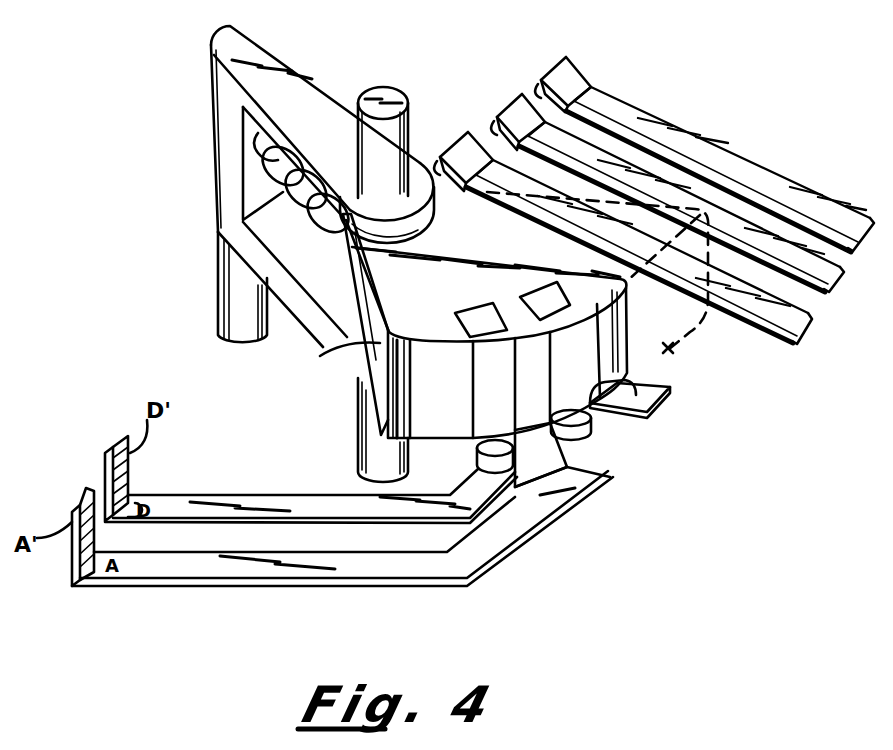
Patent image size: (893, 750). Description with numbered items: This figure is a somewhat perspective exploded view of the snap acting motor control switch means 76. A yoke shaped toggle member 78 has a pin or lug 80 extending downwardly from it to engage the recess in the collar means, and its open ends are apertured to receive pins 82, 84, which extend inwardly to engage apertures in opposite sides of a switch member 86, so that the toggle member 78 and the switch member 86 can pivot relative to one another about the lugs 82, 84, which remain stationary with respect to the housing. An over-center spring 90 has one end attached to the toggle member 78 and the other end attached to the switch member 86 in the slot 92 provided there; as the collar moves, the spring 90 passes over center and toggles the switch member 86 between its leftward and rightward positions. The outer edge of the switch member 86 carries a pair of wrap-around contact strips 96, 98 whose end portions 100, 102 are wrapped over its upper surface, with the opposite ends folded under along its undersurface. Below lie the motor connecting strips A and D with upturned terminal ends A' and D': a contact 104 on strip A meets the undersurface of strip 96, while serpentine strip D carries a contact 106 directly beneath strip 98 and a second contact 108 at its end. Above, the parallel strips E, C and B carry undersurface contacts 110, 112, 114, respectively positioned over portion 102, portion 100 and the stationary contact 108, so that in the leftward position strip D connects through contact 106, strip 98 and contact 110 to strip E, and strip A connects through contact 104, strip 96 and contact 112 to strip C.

The motor control switch means 76 is at (327, 375).
The yoke shaped toggle member 78 is at (212, 92).
The pin or lug 80 is at (218, 305).
The pin or lug 82 is at (358, 443).
The pin or lug 84 is at (392, 85).
The switch member 86 is at (670, 349).
The over-center spring 90 is at (270, 157).
The slot 92 is at (320, 355).
The wrap-around contact strip 96 is at (610, 412).
The wrap-around contact strip 98 is at (477, 403).
The end portion of contact strip 96 100 is at (538, 294).
The end portion of contact strip 98 102 is at (462, 310).
The contact 104 is at (597, 457).
The contact 106 is at (490, 478).
The second contact 108 is at (640, 377).
The contact 110 is at (436, 166).
The contact 112 is at (497, 130).
The contact 114 is at (538, 92).